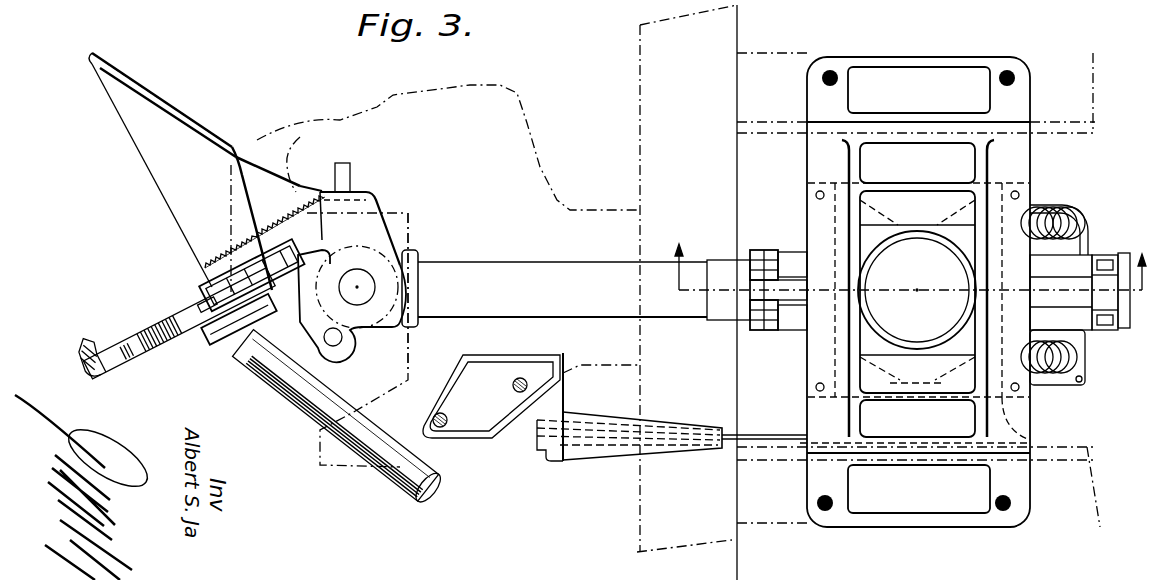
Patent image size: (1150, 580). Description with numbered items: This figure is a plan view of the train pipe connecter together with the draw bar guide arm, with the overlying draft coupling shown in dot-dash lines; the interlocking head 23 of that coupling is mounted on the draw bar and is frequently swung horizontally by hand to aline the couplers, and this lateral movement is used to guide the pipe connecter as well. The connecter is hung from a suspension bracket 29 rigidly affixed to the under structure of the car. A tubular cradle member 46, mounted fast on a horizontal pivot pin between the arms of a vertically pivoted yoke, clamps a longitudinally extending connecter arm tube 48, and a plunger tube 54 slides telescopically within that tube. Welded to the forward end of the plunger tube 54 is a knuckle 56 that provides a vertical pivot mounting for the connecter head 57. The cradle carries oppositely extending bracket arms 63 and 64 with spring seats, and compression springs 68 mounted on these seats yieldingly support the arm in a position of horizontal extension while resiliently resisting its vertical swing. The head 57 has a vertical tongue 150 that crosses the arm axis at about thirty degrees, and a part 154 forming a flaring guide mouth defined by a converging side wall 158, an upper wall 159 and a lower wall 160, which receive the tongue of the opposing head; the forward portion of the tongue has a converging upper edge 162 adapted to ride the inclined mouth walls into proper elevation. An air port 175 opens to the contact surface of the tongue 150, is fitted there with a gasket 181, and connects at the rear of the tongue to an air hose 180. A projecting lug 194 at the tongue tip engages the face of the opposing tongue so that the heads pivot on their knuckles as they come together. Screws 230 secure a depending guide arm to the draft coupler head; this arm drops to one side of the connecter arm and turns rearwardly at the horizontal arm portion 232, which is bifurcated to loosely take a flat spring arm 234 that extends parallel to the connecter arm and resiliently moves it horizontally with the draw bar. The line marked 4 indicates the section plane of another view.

The interlocking head 23 is at (473, 84).
The suspension bracket 29 is at (1012, 165).
The cradle member 46 is at (800, 326).
The connecter arm tube 48 is at (722, 319).
The plunger tube 54 is at (562, 289).
The knuckle 56 is at (416, 251).
The connecter head 57 is at (293, 181).
The bracket arm 63 is at (1083, 362).
The bracket arm 64 is at (1080, 243).
The compression spring 68 is at (1055, 207).
The tongue 150 is at (147, 333).
The guide mouth part 154 is at (196, 116).
The side wall 158 is at (170, 108).
The upper wall 159 is at (257, 186).
The lower wall 160 is at (167, 165).
The upper edge 162 is at (140, 356).
The air port 175 is at (215, 300).
The air hose 180 is at (317, 389).
The gasket 181 is at (205, 278).
The projecting lug 194 is at (103, 340).
The screws 230 is at (514, 389).
The rearward horizontal arm portion 232 is at (605, 452).
The spring arm 234 is at (754, 434).
The section line 4- 4 is at (907, 275).